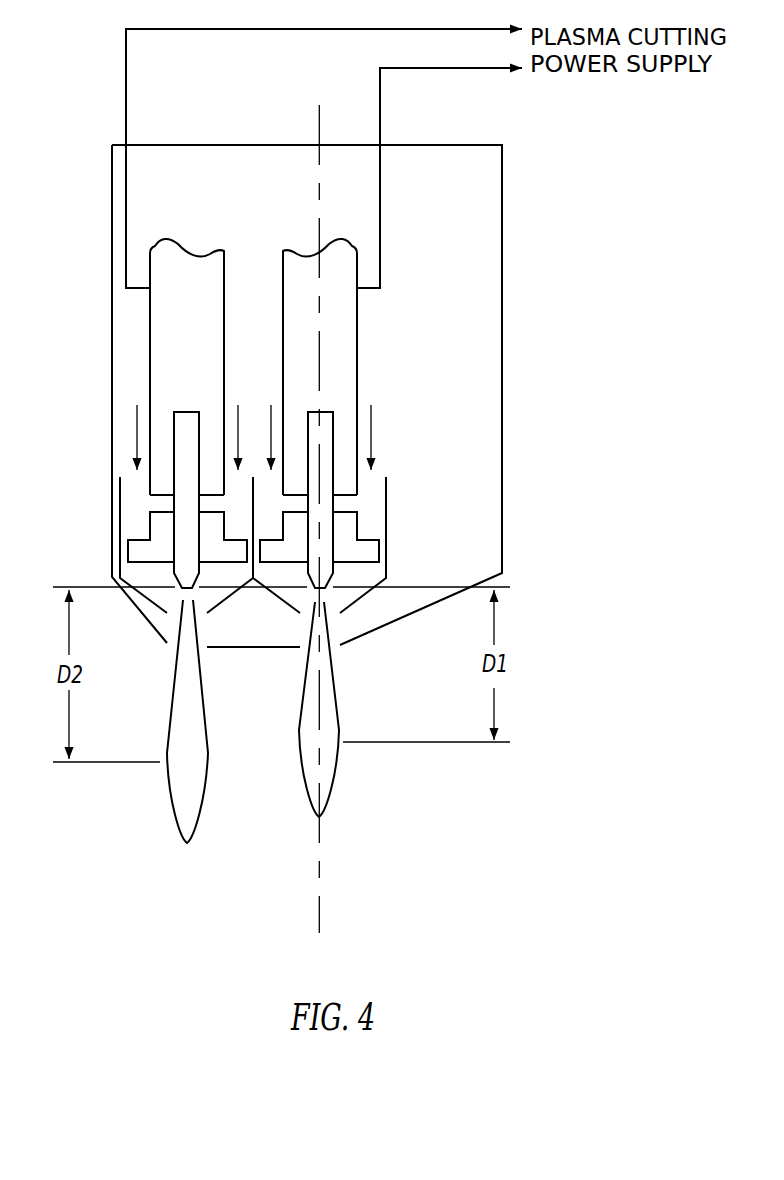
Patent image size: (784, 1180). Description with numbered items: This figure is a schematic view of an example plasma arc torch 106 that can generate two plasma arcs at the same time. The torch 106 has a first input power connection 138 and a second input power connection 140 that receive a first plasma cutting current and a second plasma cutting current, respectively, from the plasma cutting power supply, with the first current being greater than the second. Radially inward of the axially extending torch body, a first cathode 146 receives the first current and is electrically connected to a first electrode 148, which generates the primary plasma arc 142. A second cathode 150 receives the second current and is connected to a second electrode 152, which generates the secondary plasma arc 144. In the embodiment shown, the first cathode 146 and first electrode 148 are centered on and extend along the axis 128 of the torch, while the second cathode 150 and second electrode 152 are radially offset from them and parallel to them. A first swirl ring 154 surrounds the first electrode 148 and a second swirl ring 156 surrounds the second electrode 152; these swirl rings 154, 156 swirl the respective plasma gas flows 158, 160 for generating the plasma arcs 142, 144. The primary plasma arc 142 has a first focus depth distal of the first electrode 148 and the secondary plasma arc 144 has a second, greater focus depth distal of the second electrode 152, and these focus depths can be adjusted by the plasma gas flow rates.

The plasma arc torch 106 is at (502, 415).
The axis of the torch 128 is at (319, 898).
The first input power connection 138 is at (362, 292).
The second input power connection 140 is at (140, 292).
The primary plasma arc 142 is at (344, 769).
The secondary plasma arc 144 is at (163, 809).
The first cathode 146 is at (358, 372).
The first electrode 148 is at (333, 507).
The second cathode 150 is at (148, 382).
The second electrode 152 is at (174, 506).
The first swirl ring 154 is at (378, 550).
The second swirl ring 156 is at (140, 563).
The first plasma gas flow 158 is at (372, 435).
The second plasma gas flow 160 is at (137, 442).